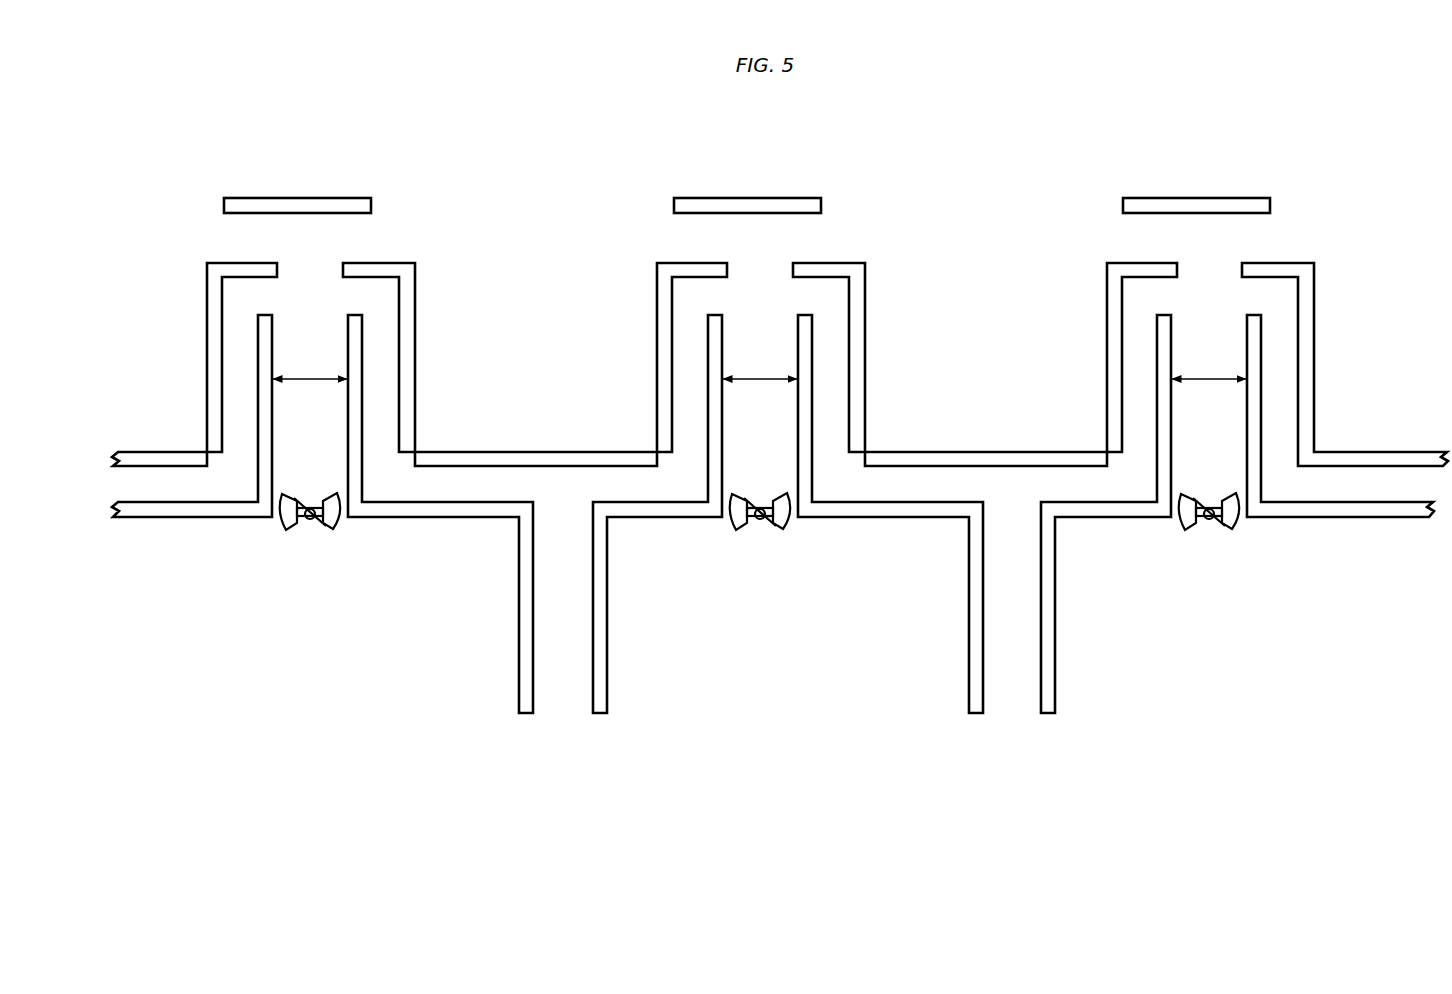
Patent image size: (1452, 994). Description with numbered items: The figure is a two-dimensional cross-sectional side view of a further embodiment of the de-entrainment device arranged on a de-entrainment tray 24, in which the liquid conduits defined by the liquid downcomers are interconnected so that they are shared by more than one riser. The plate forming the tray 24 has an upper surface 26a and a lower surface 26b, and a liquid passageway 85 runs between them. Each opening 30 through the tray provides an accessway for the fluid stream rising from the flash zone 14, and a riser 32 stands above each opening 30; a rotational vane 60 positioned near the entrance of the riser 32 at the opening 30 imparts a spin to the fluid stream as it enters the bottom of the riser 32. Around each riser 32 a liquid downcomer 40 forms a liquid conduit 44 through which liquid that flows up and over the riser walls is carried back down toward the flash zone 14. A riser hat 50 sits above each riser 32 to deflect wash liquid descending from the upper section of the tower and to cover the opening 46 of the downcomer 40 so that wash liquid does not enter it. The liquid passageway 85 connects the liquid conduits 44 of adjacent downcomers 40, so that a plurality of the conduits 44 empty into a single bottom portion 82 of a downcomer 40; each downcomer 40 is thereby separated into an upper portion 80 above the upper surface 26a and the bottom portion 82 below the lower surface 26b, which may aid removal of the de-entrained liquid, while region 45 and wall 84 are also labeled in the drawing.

The flash zone 14 is at (744, 729).
The de-entrainment tray 24 is at (170, 436).
The upper surface 26a is at (1364, 452).
The lower surface 26b is at (1375, 519).
The opening 30 is at (277, 530).
The riser 32 is at (310, 378).
The liquid downcomer 40 is at (886, 290).
The liquid conduit 44 is at (368, 407).
The second passage 45 is at (719, 304).
The opening of the downcomer 46 is at (1229, 304).
The riser hat 50 is at (297, 197).
The rotational vane 60 is at (316, 537).
The upper portion 80 is at (868, 340).
The bottom portion 82 is at (517, 643).
The bottom wall 84 is at (431, 451).
The liquid passageway 85 is at (468, 496).